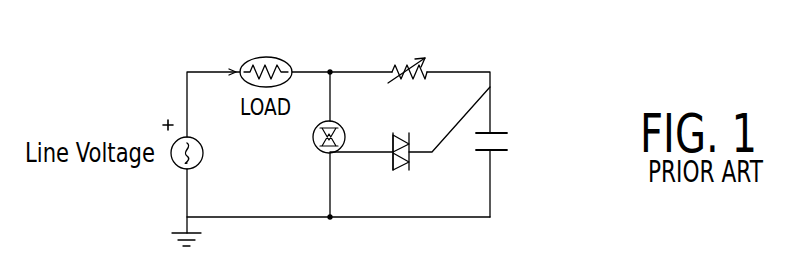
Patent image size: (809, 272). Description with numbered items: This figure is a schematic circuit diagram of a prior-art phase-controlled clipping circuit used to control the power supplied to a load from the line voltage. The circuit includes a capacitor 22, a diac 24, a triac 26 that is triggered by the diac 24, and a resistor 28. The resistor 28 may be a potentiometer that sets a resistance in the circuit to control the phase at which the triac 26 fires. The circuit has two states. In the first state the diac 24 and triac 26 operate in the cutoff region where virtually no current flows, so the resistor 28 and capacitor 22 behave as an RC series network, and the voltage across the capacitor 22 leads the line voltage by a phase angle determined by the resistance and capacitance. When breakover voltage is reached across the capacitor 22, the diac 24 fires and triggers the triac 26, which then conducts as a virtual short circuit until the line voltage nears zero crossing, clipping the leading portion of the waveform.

The capacitor 22 is at (500, 153).
The diac 24 is at (400, 170).
The triac 26 is at (320, 148).
The resistor 28 is at (432, 62).